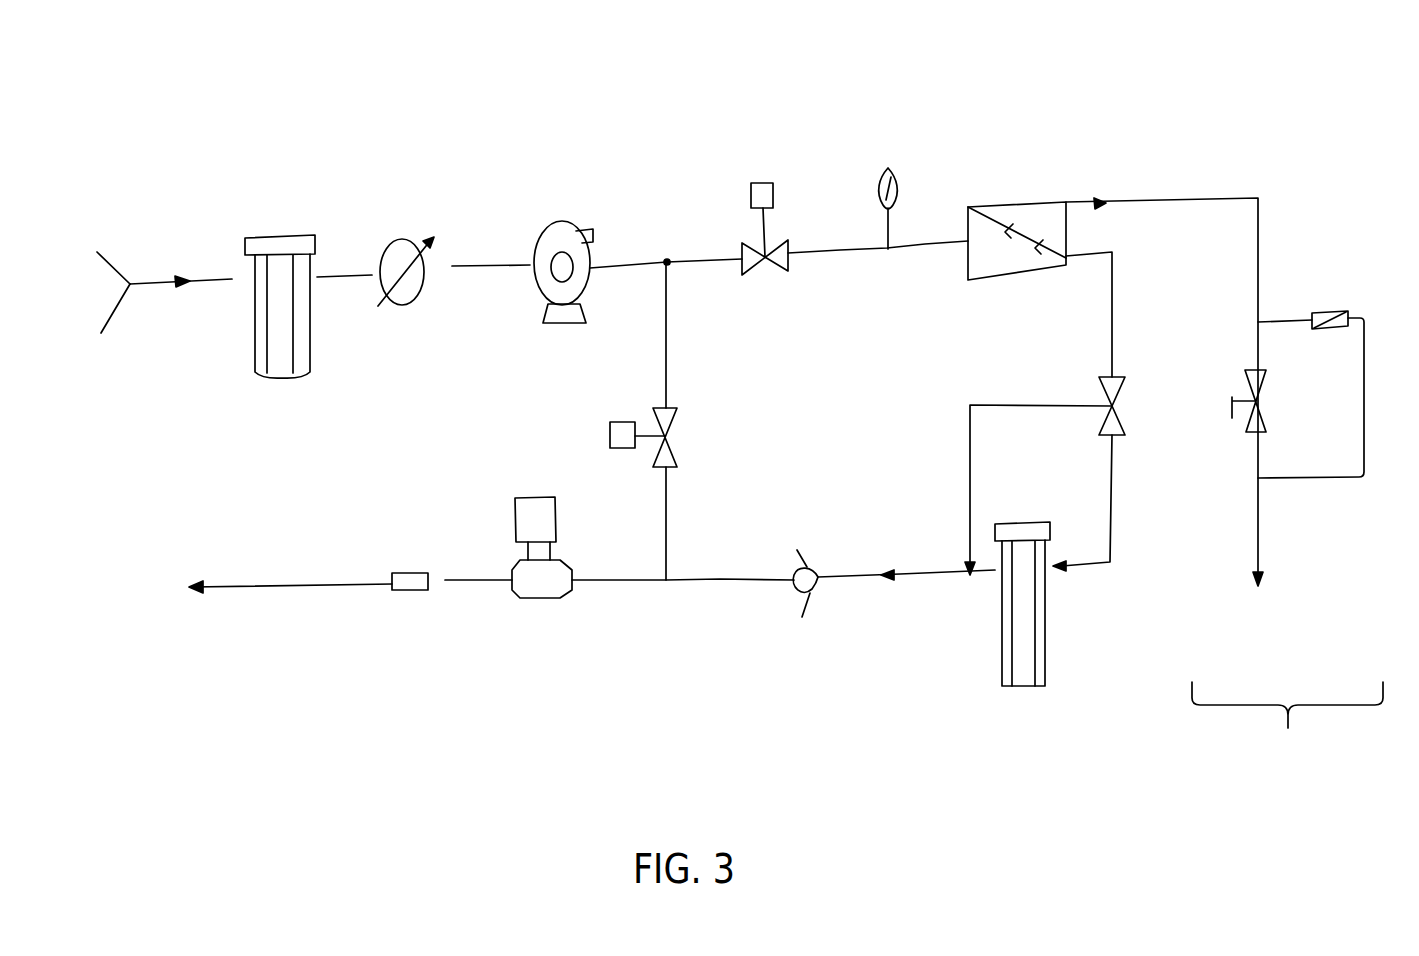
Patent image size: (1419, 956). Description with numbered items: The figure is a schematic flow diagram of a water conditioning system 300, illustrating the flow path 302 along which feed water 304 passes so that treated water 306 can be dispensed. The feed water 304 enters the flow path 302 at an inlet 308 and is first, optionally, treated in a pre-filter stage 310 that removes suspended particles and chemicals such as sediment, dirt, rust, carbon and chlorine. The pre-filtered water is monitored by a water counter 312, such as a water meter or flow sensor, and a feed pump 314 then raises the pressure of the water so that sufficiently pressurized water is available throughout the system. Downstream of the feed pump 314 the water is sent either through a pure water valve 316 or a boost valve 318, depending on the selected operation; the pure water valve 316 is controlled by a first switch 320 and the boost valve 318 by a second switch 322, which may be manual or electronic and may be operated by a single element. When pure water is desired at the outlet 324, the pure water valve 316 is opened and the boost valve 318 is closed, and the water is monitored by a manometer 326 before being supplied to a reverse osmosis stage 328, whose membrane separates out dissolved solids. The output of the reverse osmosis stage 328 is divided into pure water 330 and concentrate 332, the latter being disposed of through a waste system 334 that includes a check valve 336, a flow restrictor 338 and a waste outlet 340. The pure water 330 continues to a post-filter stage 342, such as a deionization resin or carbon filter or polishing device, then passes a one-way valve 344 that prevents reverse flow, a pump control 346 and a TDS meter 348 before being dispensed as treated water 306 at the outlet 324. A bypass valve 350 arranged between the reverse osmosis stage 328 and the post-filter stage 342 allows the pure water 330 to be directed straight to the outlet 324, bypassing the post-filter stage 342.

The water conditioning system 300 is at (1219, 73).
The flow path 302 is at (166, 276).
The feed water 304 is at (43, 318).
The treated water 306 is at (126, 624).
The inlet 308 is at (134, 286).
The pre-filter stage 310 is at (308, 269).
The water counter 312 is at (453, 220).
The feed pump 314 is at (600, 224).
The pure water valve 316 is at (855, 287).
The boost valve 318 is at (693, 447).
The first switch 320 is at (771, 205).
The second switch 322 is at (612, 440).
The outlet 324 is at (192, 583).
The manometer 326 is at (897, 175).
The reverse osmosis stage 328 is at (1014, 209).
The pure water 330 is at (1077, 314).
The concentrate 332 is at (1162, 362).
The waste system 334 is at (1287, 726).
The check valve 336 is at (1223, 414).
The flow restrictor 338 is at (1311, 344).
The waste outlet 340 is at (1276, 624).
The post-filter stage 342 is at (1012, 605).
The one-way valve 344 is at (807, 581).
The pump control 346 is at (508, 597).
The TDS meter 348 is at (310, 623).
The bypass valve 350 is at (1070, 465).